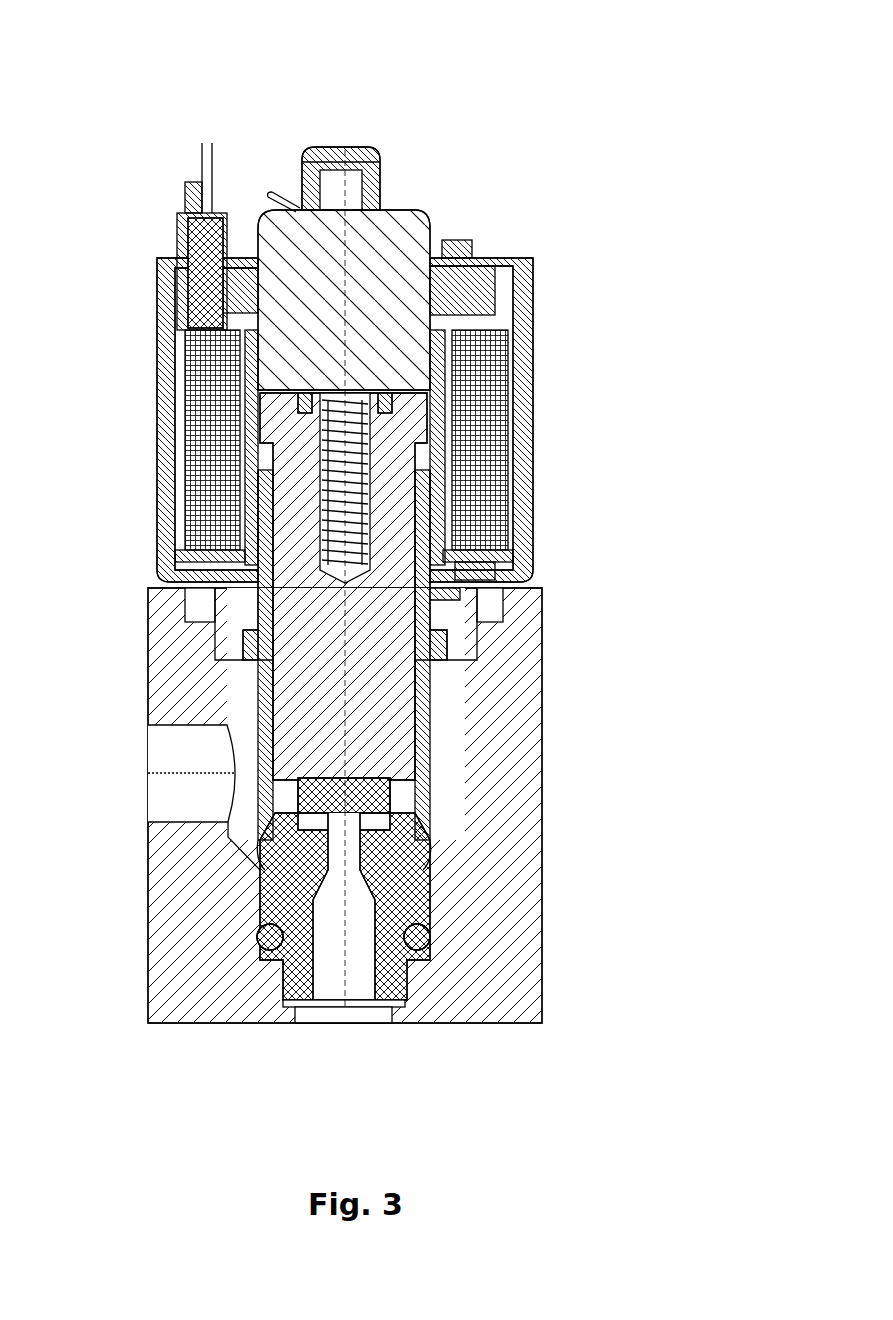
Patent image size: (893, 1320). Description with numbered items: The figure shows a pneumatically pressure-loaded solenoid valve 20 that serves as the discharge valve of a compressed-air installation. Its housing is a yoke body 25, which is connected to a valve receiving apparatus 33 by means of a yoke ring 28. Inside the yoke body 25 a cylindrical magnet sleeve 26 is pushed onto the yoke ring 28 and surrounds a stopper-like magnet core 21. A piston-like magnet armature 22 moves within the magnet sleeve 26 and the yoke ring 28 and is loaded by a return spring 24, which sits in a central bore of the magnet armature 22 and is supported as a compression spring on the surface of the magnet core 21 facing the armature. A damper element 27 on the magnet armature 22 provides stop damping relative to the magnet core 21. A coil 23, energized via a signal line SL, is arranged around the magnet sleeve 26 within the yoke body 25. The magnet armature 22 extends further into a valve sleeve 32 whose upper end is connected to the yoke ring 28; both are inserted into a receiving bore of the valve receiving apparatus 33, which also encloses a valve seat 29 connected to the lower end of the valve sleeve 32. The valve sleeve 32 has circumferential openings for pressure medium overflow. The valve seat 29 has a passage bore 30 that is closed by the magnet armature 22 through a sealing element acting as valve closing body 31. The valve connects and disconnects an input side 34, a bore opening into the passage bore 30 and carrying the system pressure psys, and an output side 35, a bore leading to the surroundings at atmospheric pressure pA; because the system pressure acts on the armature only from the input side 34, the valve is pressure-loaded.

The solenoid valve 20 is at (272, 82).
The magnet core 21 is at (405, 228).
The magnet armature 22 is at (380, 680).
The coil 23 is at (482, 357).
The return spring 24 is at (340, 458).
The yoke body 25 is at (157, 280).
The magnet sleeve 26 is at (257, 410).
The damper element 27 is at (392, 410).
The yoke ring 28 is at (448, 598).
The valve seat 29 is at (290, 902).
The passage bore 30 is at (350, 870).
The valve closing body 31 is at (360, 790).
The valve sleeve 32 is at (268, 683).
The valve receiving apparatus 33 is at (162, 1003).
The input side 34 is at (307, 1015).
The output side 35 is at (160, 743).
The signal line SL is at (205, 140).
The atmospheric pressure pA is at (248, 812).
The system pressure psys is at (363, 1015).